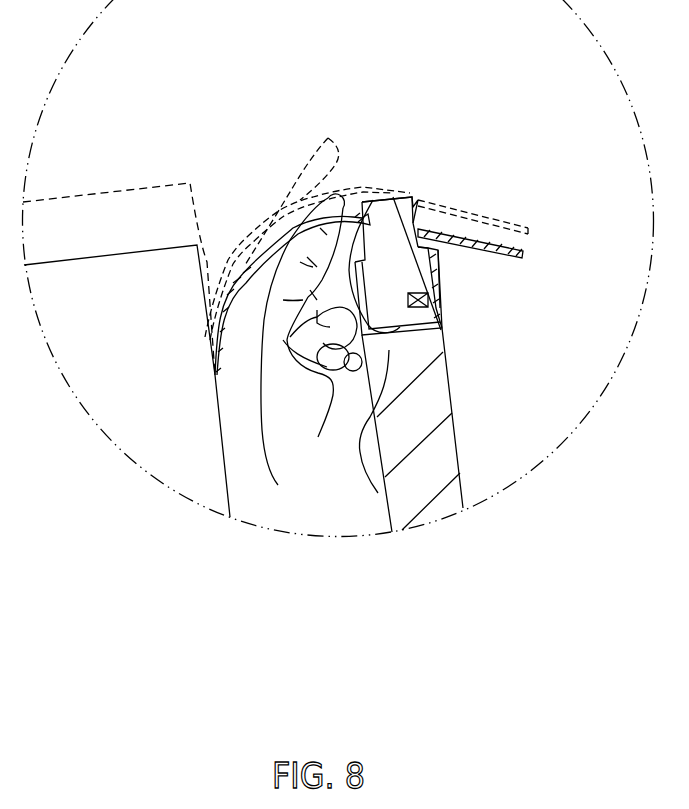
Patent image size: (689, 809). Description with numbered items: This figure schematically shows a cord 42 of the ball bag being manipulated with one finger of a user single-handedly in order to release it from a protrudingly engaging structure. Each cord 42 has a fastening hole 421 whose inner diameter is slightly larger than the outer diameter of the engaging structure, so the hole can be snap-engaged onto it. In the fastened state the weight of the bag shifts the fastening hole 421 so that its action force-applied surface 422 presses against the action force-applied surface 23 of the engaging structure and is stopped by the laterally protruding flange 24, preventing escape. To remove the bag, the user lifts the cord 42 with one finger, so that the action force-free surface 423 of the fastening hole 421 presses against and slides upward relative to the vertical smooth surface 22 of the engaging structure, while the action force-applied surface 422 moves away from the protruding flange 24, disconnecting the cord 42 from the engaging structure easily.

The cord 42 is at (250, 278).
The fastening hole 421 is at (393, 192).
The action force-applied surface 422 is at (482, 217).
The action force-free surface 423 is at (380, 200).
The protruding flange 24 is at (412, 197).
The action force-applied surface 23 is at (415, 216).
The vertical smooth surface 22 is at (370, 312).